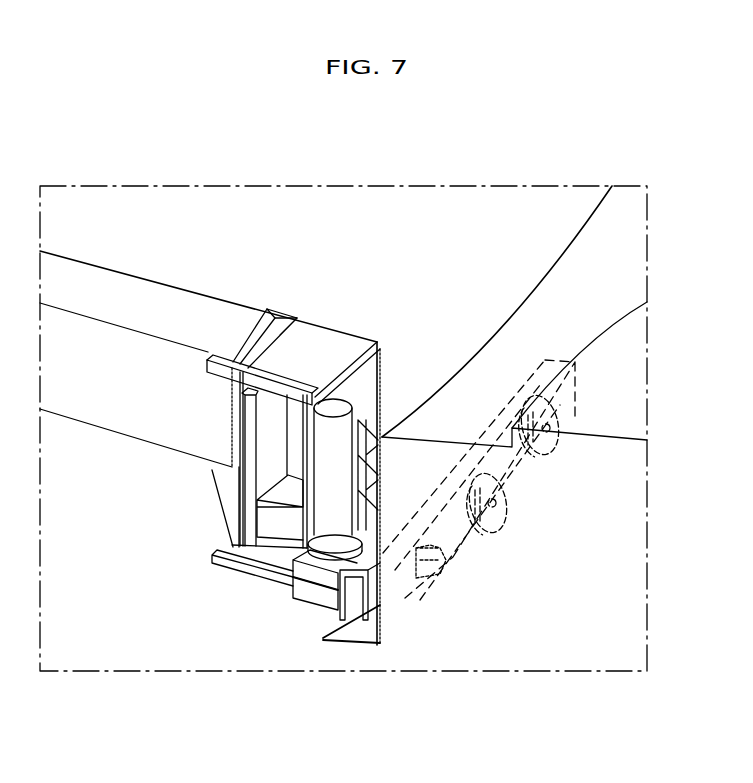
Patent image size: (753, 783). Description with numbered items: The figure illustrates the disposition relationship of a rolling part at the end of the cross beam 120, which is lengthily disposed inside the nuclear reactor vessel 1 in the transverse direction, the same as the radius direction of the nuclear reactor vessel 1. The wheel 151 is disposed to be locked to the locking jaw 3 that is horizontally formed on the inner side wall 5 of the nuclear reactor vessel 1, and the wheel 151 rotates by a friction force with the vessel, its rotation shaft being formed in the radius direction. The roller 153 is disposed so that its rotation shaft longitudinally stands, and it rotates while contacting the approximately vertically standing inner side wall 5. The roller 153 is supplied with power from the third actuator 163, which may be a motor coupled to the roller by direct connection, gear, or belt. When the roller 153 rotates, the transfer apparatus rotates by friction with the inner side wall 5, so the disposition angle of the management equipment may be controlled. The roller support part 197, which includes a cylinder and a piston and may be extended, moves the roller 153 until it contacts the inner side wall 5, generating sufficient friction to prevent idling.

The nuclear reactor vessel 1 is at (605, 396).
The locking jaw 3 is at (360, 633).
The inner side wall 5 is at (333, 535).
The cross beam 120 is at (180, 300).
The wheel 151 is at (487, 533).
The roller 153 is at (424, 568).
The third actuator 163 is at (347, 408).
The roller support part 197 is at (277, 523).